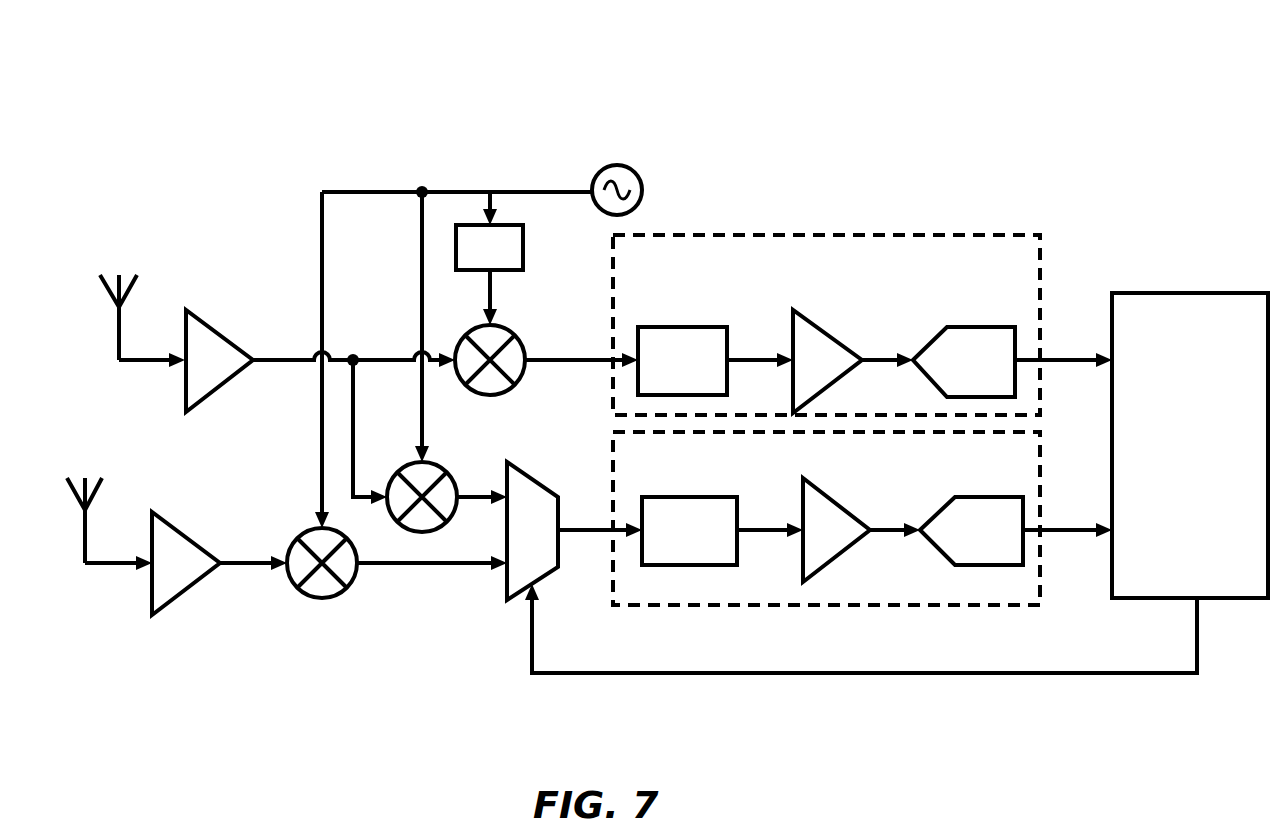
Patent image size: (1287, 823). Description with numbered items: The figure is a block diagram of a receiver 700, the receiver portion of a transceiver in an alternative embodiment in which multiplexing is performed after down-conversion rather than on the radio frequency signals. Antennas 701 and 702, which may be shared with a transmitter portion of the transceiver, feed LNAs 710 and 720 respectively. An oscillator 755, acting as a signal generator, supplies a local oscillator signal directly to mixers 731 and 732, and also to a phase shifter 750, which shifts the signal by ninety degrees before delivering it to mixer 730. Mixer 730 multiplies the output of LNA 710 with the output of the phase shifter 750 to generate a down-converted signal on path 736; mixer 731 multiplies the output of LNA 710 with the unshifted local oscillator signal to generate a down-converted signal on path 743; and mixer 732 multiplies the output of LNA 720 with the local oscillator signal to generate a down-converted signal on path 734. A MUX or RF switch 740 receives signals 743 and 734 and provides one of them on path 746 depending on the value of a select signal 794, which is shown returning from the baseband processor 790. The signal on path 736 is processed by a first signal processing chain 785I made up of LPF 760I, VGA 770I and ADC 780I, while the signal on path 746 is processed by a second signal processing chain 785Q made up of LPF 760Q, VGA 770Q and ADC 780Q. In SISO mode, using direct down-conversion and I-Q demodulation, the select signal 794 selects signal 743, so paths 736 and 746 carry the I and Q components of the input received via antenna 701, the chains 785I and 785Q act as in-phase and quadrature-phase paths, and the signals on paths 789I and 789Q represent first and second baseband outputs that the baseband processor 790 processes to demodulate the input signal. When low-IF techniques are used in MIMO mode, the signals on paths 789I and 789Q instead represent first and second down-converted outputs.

The receiver 700 is at (636, 84).
The antenna 701 is at (107, 298).
The antenna 702 is at (74, 500).
The LNA 710 is at (210, 325).
The LNA 720 is at (170, 525).
The mixer 730 is at (514, 338).
The mixer 731 is at (438, 468).
The mixer 732 is at (318, 598).
The path 734 is at (482, 563).
The path 736 is at (560, 360).
The MUX or RF switch 740 is at (535, 478).
The path 743 is at (482, 497).
The path 746 is at (575, 530).
The phase shifter 750 is at (523, 240).
The oscillator 755 is at (643, 190).
The LPF 760I is at (677, 327).
The LPF 760Q is at (683, 497).
The VGA 770I is at (820, 322).
The VGA 770Q is at (832, 492).
The ADC 780I is at (965, 327).
The ADC 780Q is at (968, 497).
The signal processing chain 785I is at (672, 262).
The signal processing chain 785Q is at (675, 459).
The path 789I is at (1060, 360).
The path 789Q is at (1058, 530).
The baseband processor 790 is at (1172, 483).
The select signal 794 is at (793, 673).